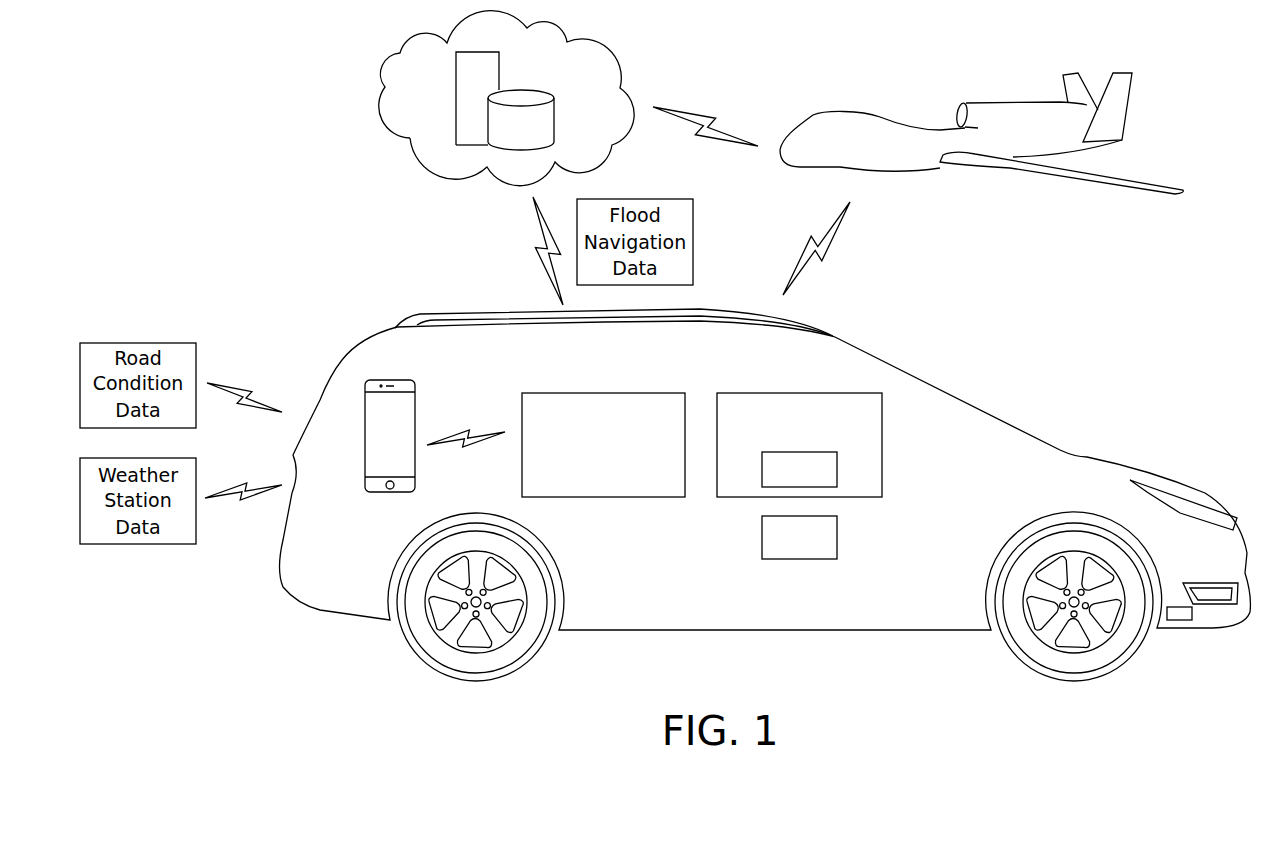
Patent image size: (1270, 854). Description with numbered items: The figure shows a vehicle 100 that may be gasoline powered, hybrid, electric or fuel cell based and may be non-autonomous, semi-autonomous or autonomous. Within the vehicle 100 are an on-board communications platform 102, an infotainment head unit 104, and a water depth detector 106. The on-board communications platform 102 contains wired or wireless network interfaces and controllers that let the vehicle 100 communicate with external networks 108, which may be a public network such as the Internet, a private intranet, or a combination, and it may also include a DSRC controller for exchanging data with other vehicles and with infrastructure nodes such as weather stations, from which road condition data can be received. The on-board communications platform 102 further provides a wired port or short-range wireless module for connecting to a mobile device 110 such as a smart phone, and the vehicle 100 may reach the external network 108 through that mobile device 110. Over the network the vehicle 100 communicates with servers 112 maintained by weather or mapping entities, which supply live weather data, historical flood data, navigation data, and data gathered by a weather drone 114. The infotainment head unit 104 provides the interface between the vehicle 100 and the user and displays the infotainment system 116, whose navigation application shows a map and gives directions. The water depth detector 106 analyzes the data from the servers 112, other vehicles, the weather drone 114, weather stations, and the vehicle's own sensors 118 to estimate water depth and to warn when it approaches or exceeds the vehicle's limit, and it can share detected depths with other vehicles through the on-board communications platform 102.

The vehicle 100 is at (1090, 457).
The on-board communications platform 102 is at (600, 393).
The infotainment head unit 104 is at (799, 420).
The water depth detector 106 is at (799, 537).
The external network 108 is at (382, 80).
The mobile device 110 is at (415, 406).
The servers 112 is at (499, 72).
The weather drone 114 is at (1133, 106).
The infotainment system 116 is at (799, 469).
The sensors 118 is at (1178, 620).